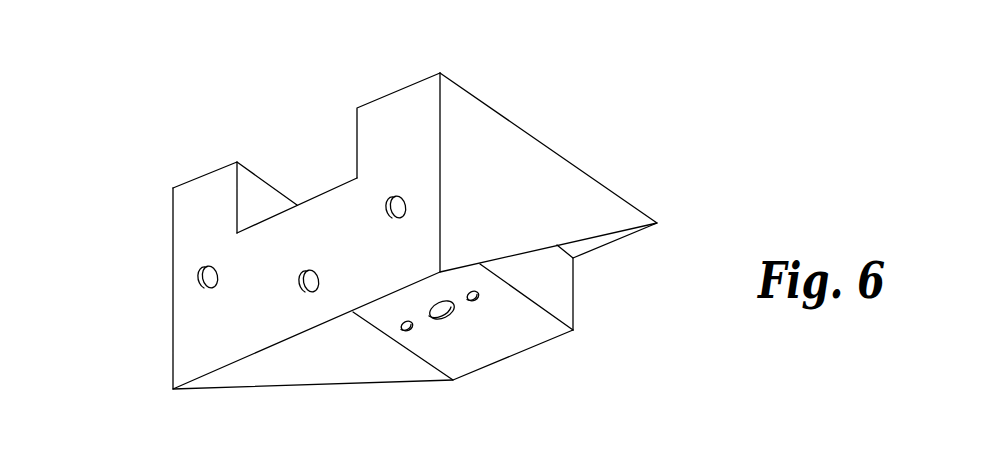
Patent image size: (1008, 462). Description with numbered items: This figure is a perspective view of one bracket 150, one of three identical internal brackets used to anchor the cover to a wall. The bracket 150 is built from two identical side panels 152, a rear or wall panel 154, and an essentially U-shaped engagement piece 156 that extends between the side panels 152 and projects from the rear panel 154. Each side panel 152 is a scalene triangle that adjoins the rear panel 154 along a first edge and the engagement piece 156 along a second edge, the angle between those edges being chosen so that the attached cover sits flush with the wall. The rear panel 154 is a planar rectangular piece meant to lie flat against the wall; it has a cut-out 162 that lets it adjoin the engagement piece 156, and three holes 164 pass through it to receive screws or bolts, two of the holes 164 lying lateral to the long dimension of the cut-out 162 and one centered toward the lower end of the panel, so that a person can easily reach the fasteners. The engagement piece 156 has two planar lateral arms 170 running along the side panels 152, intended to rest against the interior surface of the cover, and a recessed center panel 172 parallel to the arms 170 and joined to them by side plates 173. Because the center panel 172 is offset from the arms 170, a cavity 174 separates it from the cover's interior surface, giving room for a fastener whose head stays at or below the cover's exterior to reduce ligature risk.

The bracket 150 is at (597, 100).
The side panel 152 is at (578, 197).
The rear panel 154 is at (233, 313).
The engagement piece 156 is at (587, 245).
The cut-out 162 is at (296, 215).
The hole 164 is at (200, 275).
The lateral arm 170 is at (207, 193).
The center panel 172 is at (497, 342).
The side plate 173 is at (550, 275).
The cavity 174 is at (313, 160).